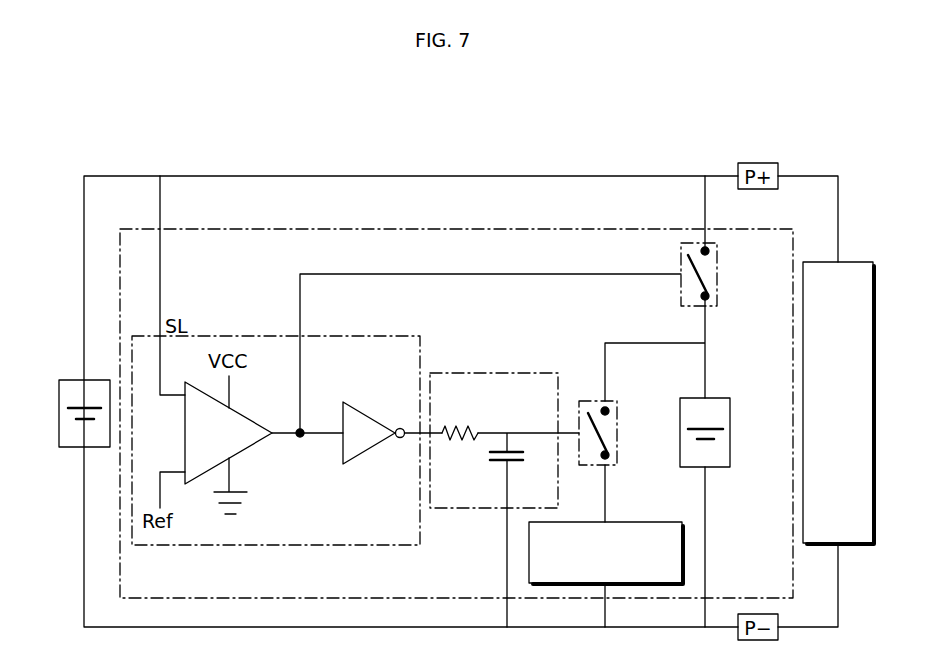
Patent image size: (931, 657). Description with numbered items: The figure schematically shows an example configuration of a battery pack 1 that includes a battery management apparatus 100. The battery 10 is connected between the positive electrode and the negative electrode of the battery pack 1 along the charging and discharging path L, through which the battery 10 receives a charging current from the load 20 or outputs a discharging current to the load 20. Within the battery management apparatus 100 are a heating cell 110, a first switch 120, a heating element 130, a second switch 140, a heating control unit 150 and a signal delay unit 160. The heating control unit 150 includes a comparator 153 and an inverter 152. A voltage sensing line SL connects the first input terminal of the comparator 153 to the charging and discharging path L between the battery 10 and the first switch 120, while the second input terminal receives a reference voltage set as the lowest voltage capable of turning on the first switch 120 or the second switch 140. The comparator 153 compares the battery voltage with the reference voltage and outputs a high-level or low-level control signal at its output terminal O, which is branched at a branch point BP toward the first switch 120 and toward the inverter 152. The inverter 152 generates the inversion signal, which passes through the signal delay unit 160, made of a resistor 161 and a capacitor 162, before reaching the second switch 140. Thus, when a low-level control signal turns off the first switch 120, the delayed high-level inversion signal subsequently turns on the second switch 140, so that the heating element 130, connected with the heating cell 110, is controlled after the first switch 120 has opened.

The battery pack 1 is at (146, 156).
The battery 10 is at (58, 413).
The load 20 is at (861, 260).
The battery management apparatus 100 is at (578, 228).
The heating cell 110 is at (730, 433).
The first switch 120 is at (717, 274).
The heating element 130 is at (655, 520).
The second switch 140 is at (617, 433).
The heating control unit 150 is at (378, 335).
The inverter 152 is at (371, 420).
The comparator 153 is at (251, 419).
The signal delay unit 160 is at (490, 371).
The resistor 161 is at (466, 425).
The capacitor 162 is at (523, 462).